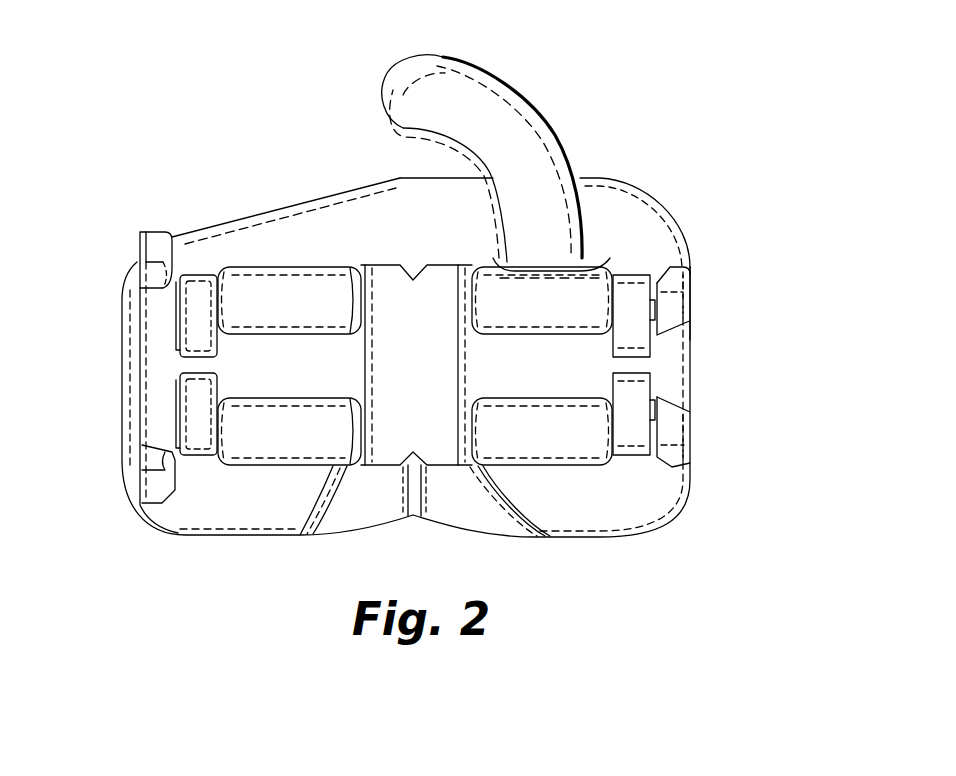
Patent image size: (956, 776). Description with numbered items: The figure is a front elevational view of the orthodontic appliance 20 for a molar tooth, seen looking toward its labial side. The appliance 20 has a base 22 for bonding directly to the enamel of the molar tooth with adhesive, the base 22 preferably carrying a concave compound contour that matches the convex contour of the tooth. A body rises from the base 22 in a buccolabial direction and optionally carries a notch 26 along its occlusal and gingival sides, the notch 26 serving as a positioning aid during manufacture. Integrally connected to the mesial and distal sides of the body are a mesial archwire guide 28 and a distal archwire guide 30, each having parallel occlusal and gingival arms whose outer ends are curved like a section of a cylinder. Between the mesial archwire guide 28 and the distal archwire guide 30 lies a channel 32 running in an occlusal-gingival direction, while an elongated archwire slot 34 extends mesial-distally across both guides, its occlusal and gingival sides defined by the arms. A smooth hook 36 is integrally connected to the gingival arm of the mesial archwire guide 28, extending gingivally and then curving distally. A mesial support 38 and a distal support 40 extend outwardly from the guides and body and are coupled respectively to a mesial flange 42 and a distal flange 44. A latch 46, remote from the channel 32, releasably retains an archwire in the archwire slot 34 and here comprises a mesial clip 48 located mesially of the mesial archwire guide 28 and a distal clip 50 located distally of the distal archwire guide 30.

The orthodontic appliance 20 is at (733, 180).
The base 22 is at (287, 218).
The notch 26 is at (410, 265).
The mesial archwire guide 28 is at (577, 443).
The distal archwire guide 30 is at (313, 442).
The channel 32 is at (360, 437).
The archwire slot 34 is at (290, 373).
The hook 36 is at (450, 95).
The mesial support 38 is at (633, 368).
The distal support 40 is at (195, 365).
The mesial flange 42 is at (678, 302).
The distal flange 44 is at (153, 245).
The latch 46 is at (708, 267).
The mesial clip 48 is at (633, 435).
The distal clip 50 is at (200, 440).